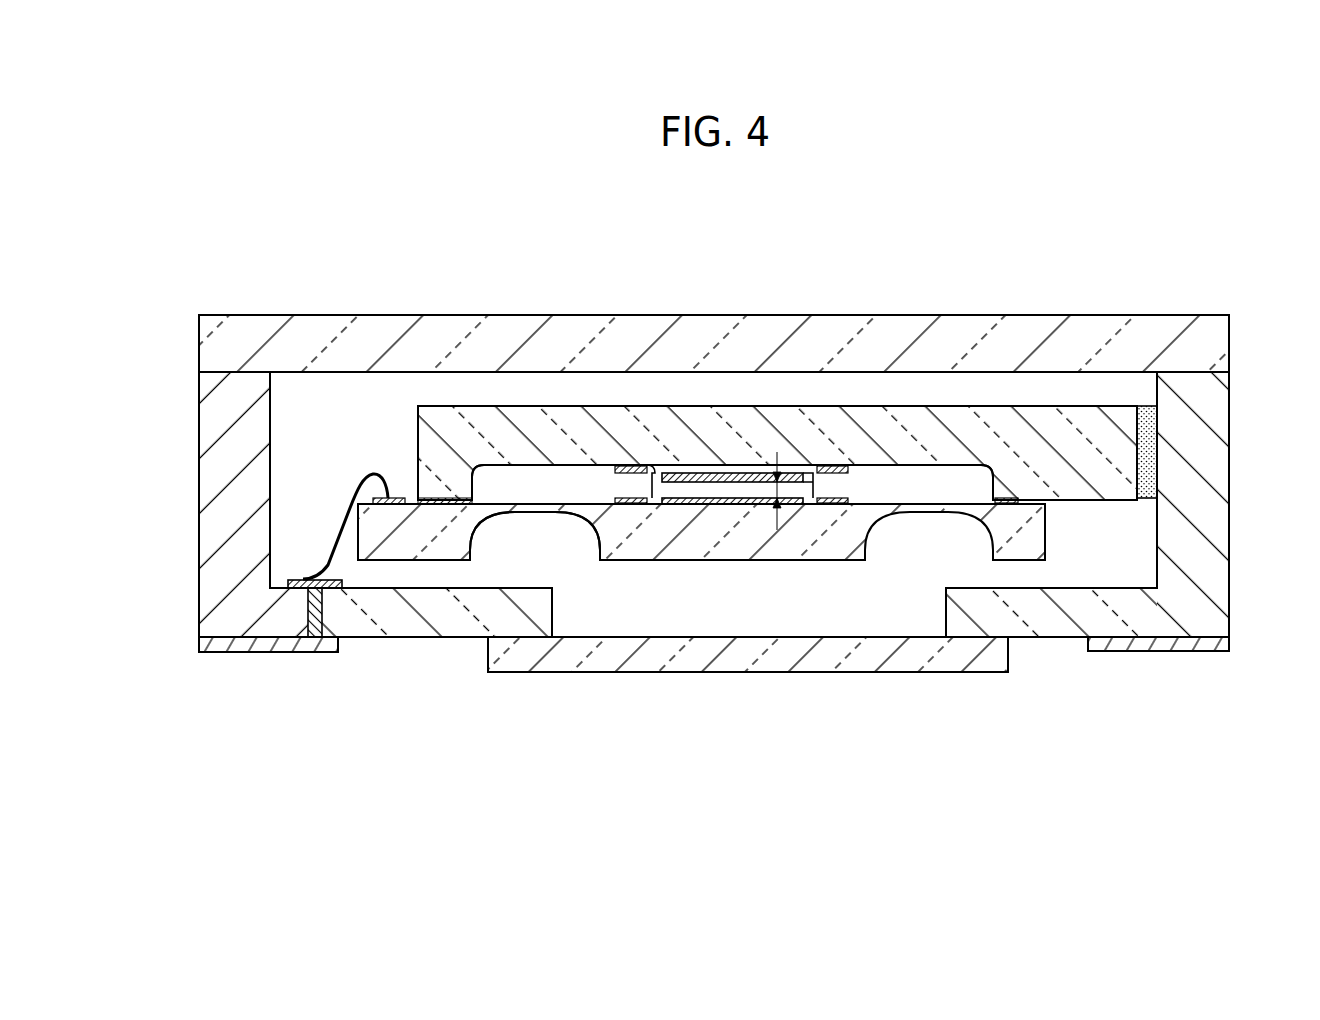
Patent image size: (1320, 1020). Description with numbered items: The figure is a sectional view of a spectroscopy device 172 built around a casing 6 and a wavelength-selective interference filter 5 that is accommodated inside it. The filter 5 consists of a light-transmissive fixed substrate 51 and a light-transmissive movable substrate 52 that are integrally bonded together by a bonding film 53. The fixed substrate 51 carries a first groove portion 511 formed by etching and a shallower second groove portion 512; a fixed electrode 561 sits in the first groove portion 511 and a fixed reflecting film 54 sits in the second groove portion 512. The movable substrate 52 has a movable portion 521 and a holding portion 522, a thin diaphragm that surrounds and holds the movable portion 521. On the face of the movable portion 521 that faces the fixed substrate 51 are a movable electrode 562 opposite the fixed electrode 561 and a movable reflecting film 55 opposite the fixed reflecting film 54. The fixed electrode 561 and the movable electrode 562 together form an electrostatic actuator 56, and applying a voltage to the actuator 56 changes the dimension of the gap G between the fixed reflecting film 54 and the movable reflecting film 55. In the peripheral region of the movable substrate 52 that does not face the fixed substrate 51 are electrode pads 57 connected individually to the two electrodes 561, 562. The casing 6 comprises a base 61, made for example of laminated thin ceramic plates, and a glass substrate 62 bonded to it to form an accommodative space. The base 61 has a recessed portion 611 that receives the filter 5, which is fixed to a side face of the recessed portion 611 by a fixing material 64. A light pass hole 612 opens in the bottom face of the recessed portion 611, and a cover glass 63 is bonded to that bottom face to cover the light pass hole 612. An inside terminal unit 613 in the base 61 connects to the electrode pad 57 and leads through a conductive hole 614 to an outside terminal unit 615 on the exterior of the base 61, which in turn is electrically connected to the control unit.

The spectroscopy device 172 is at (1056, 252).
The wavelength-selective interference filter 5 is at (403, 390).
The fixed substrate 51 is at (661, 415).
The first groove portion 511 is at (527, 470).
The second groove portion 512 is at (654, 476).
The movable substrate 52 is at (410, 548).
The movable portion 521 is at (620, 561).
The holding portion 522 is at (553, 514).
The bonding film 53 is at (405, 497).
The fixed reflecting film 54 is at (757, 472).
The movable reflecting film 55 is at (717, 505).
The electrostatic actuator 56 is at (945, 270).
The fixed electrode 561 is at (838, 472).
The movable electrode 562 is at (850, 500).
The electrode pad 57 is at (390, 484).
The gap G is at (779, 490).
The casing 6 is at (183, 464).
The base 61 is at (200, 577).
The recessed portion 611 is at (1090, 588).
The light pass hole 612 is at (946, 615).
The inside terminal unit 613 is at (304, 580).
The conductive hole 614 is at (311, 620).
The outside terminal unit 615 is at (253, 653).
The glass substrate 62 is at (205, 338).
The cover glass 63 is at (847, 672).
The fixing material 64 is at (1152, 415).